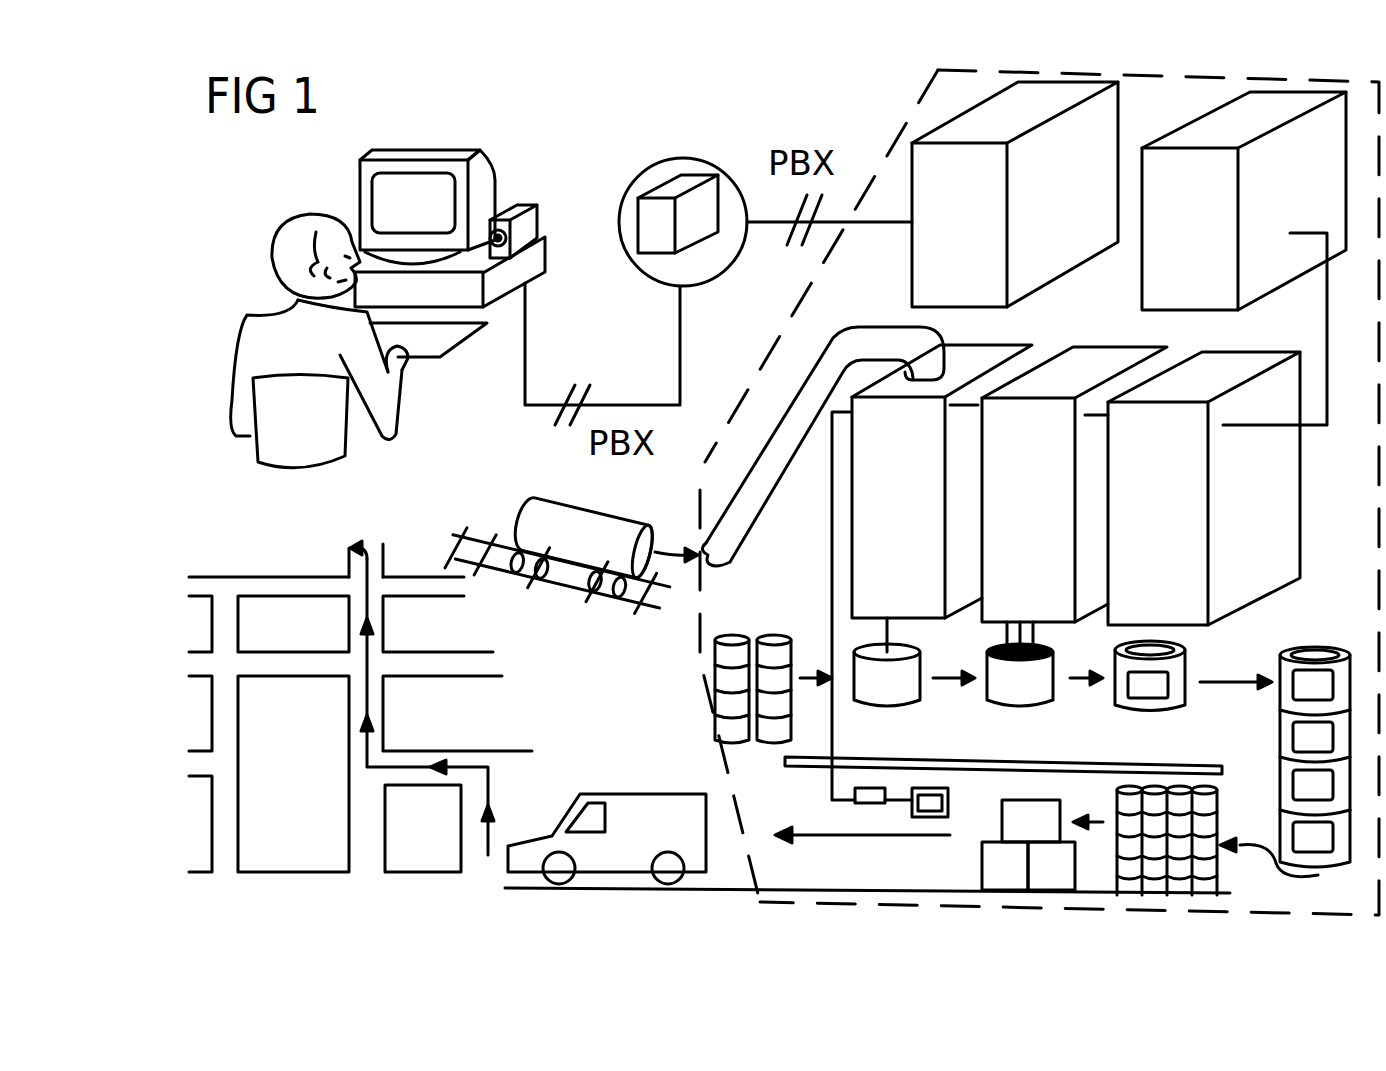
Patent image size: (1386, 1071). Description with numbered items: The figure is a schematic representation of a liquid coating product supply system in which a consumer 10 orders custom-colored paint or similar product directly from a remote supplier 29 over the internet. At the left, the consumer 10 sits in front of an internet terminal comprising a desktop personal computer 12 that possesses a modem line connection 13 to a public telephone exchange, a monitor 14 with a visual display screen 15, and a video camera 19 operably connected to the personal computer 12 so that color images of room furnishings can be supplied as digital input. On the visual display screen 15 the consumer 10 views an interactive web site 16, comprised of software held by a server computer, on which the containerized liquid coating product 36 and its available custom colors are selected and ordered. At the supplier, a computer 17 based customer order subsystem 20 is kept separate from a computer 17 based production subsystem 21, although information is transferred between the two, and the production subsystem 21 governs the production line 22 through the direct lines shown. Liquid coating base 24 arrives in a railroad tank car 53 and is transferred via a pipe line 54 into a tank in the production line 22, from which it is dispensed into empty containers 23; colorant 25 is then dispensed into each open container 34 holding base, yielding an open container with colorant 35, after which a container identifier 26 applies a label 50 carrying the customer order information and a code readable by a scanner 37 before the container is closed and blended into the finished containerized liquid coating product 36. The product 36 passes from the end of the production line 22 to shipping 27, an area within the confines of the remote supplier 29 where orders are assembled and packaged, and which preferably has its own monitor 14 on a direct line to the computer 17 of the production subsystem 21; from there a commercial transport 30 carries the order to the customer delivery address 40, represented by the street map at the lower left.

The consumer 10 is at (275, 333).
The personal computer 12 is at (530, 265).
The modem line connection 13 is at (572, 398).
The monitor 14 is at (450, 160).
The visual display screen 15 is at (387, 202).
The web site 16 is at (665, 195).
The computer 17 is at (700, 178).
The video camera 19 is at (514, 210).
The customer order subsystem 20 is at (988, 118).
The production subsystem 21 is at (1212, 125).
The production line 22 is at (795, 388).
The empty containers 23 is at (776, 632).
The liquid coating base 24 is at (915, 533).
The colorant 25 is at (1044, 533).
The container identifier 26 is at (1174, 533).
The shipping 27 is at (910, 883).
The remote supplier 29 is at (697, 648).
The transport 30 is at (633, 790).
The open container with liquid coating base 34 is at (920, 668).
The open container with colorant 35 is at (1050, 672).
The containerized liquid coating product 36 is at (1282, 665).
The scanner 37 is at (862, 788).
The customer delivery address 40 is at (360, 700).
The label 50 is at (1165, 695).
The railroad tank car 53 is at (522, 498).
The pipe line 54 is at (727, 516).